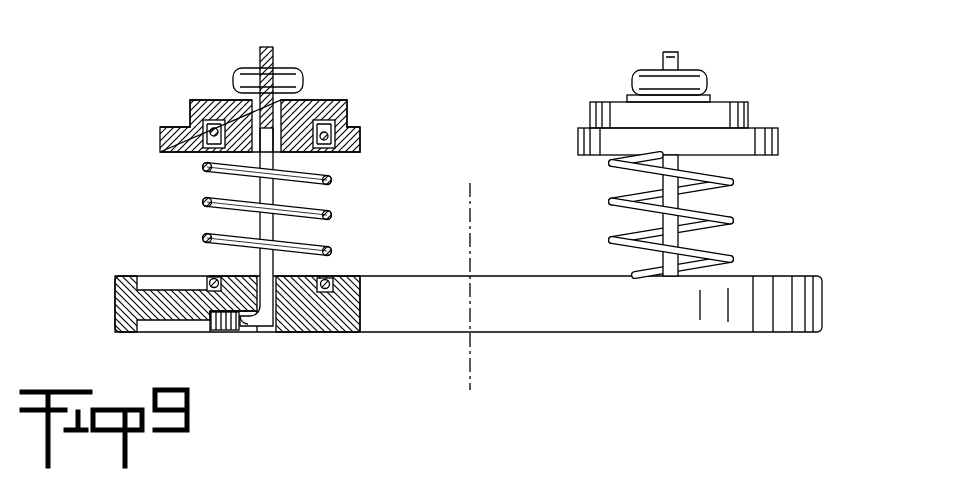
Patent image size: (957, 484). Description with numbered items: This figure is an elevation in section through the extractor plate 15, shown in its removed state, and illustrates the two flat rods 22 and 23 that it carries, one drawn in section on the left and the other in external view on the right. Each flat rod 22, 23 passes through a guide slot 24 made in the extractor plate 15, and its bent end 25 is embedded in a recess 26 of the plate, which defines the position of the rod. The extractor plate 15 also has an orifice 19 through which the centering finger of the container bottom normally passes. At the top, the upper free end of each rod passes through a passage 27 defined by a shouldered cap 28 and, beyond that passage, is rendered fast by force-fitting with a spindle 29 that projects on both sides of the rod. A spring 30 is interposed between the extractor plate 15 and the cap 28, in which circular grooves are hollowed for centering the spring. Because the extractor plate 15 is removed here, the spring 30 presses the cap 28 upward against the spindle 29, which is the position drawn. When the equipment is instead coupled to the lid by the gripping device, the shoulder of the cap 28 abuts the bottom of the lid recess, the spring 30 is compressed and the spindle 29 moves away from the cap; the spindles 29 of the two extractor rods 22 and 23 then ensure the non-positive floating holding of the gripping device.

The extractor plate 15 is at (670, 307).
The orifice 19 is at (360, 308).
The flat rod 22 is at (270, 196).
The flat rod 23 is at (720, 173).
The guide slot 24 is at (262, 328).
The bent end 25 is at (258, 330).
The recess 26 is at (235, 328).
The passage 27 is at (253, 118).
The shouldered cap 28 is at (165, 136).
The spindle 29 is at (287, 80).
The spring 30 is at (330, 253).